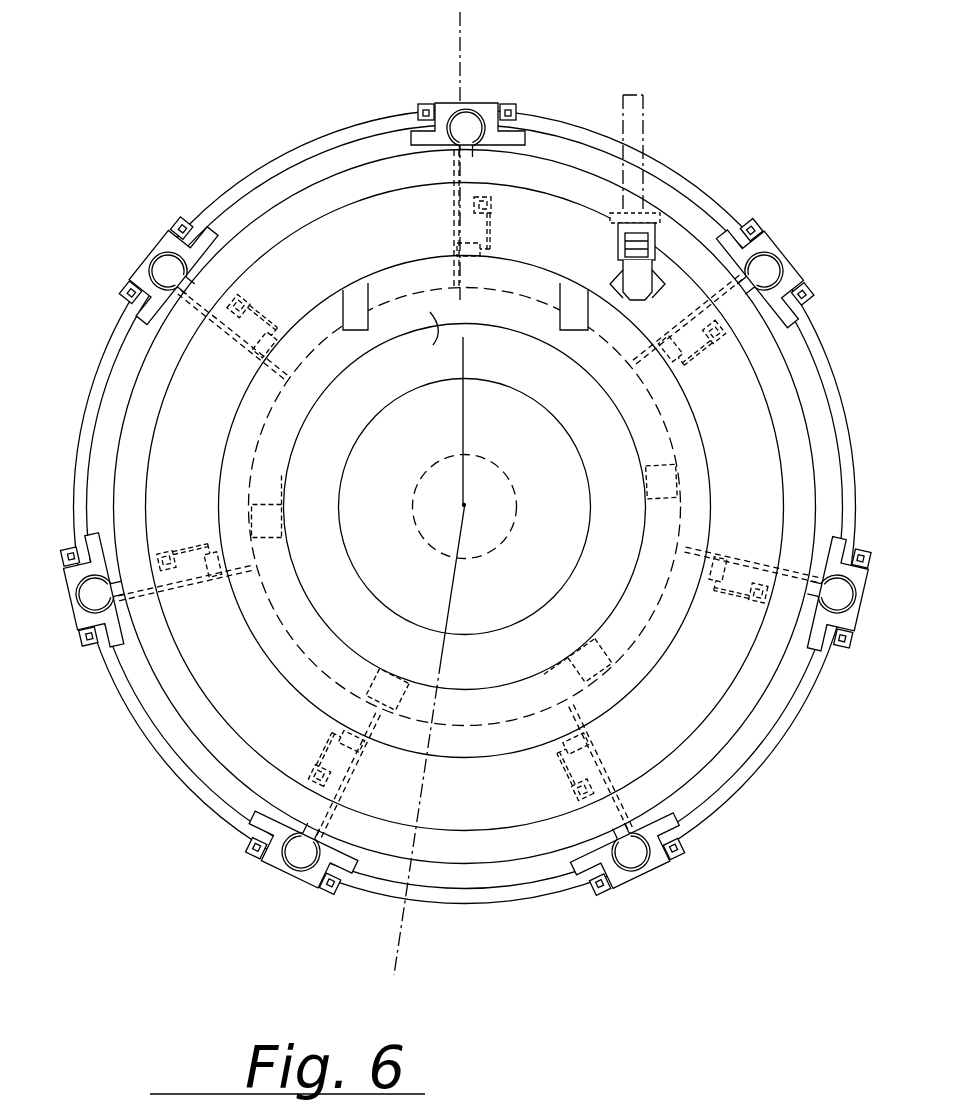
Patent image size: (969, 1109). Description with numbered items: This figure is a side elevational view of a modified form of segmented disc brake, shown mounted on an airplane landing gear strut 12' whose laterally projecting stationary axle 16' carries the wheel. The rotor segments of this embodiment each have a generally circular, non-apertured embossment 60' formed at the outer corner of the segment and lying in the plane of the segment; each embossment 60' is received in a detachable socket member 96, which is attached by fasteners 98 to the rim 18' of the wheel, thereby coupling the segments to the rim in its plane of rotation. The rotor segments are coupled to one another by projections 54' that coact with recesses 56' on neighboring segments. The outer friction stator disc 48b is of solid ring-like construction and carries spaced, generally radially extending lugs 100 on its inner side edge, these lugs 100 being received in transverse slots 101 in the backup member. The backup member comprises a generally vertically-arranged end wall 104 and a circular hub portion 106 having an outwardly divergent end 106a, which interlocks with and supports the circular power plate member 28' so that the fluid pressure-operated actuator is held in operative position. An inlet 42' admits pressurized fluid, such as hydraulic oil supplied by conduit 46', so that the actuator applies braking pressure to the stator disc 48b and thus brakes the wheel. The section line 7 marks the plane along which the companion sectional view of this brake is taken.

The section line 7 is at (452, 38).
The landing gear strut 12' is at (474, 507).
The stationary axle 16' is at (479, 488).
The wheel rim 18' is at (452, 507).
The power plate member 28' is at (465, 493).
The inlet 42' is at (666, 217).
The conduit 46' is at (666, 147).
The stator disc 48b is at (296, 198).
The projection 54' is at (468, 493).
The recess 56' is at (464, 499).
The embossment 60' is at (480, 485).
The socket member 96 is at (446, 102).
The fasteners 98 is at (424, 104).
The lugs 100 is at (356, 332).
The transverse slots 101 is at (286, 487).
The end wall 104 is at (465, 507).
The hub portion 106 is at (478, 688).
The outwardly divergent end 106a is at (435, 341).